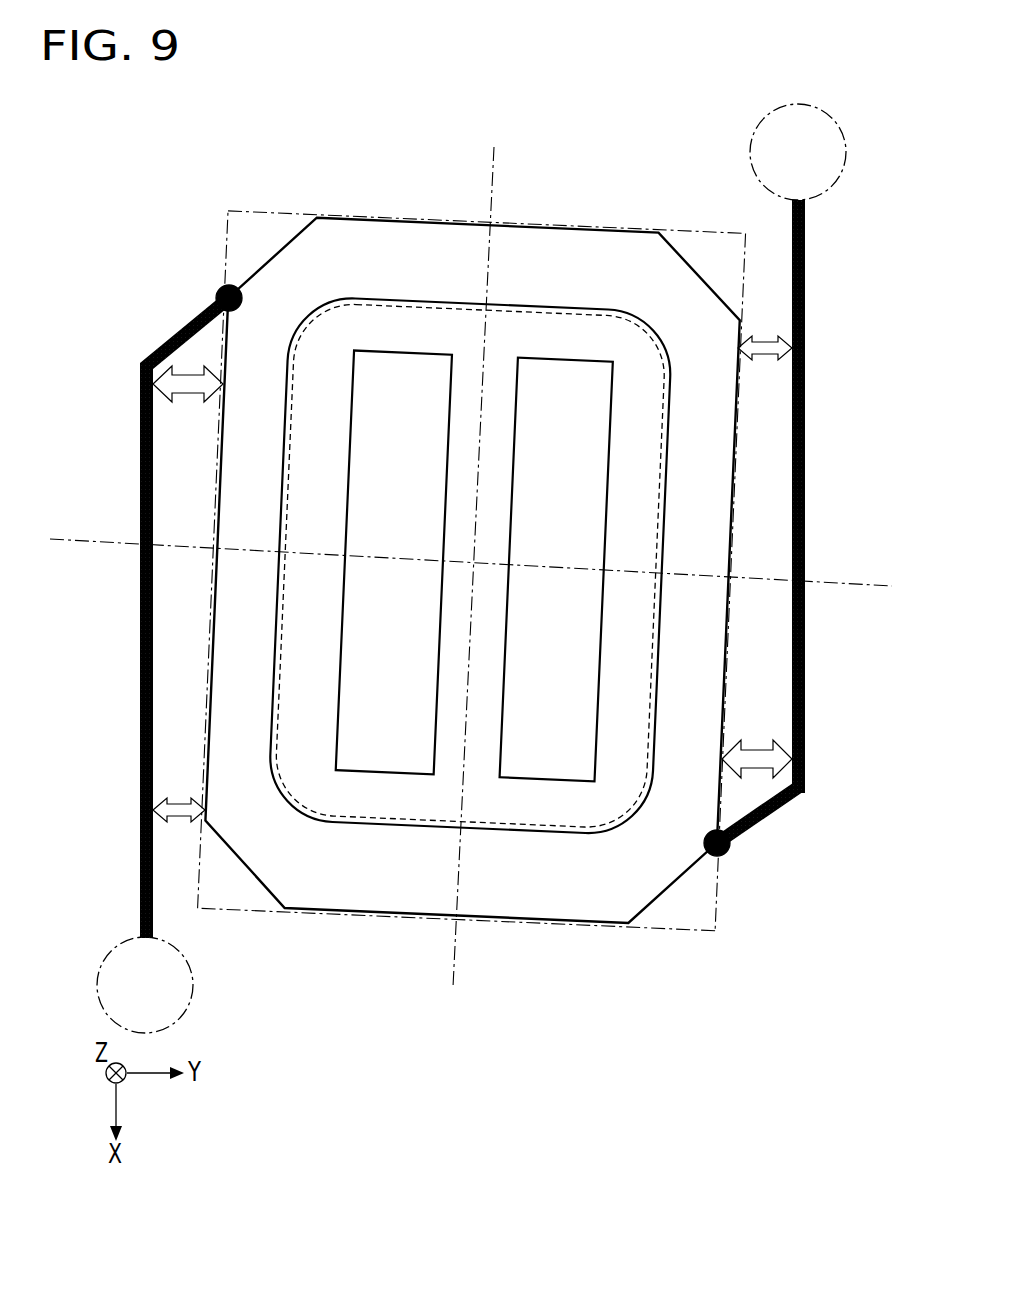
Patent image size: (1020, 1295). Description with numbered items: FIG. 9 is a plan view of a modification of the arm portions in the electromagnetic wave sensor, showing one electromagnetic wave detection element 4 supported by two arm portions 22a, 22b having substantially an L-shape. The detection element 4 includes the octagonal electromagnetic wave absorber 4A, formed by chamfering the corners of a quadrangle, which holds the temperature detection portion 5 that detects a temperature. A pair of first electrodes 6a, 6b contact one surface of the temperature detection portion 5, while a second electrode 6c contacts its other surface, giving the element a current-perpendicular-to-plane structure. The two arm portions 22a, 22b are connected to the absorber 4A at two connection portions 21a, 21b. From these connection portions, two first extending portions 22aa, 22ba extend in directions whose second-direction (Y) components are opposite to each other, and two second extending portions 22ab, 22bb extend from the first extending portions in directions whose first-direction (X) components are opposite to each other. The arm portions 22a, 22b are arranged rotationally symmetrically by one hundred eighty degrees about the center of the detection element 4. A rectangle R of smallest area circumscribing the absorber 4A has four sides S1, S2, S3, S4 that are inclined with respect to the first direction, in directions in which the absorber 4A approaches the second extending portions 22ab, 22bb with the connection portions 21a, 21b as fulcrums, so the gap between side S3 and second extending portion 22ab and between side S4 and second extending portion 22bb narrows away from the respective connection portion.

The electromagnetic wave detection element 4 is at (475, 519).
The electromagnetic wave absorber 4A is at (320, 200).
The temperature detection portion 5 is at (610, 310).
The first electrode 6a is at (558, 395).
The first electrode 6b is at (400, 382).
The second electrode 6c is at (499, 310).
The connection portion 21a is at (725, 856).
The connection portion 21b is at (222, 289).
The arm portion 22a is at (813, 544).
The first extending portion 22aa is at (772, 814).
The second extending portion 22ab is at (806, 462).
The arm portion 22b is at (135, 595).
The first extending portion 22ba is at (182, 333).
The second extending portion 22bb is at (140, 626).
The rectangle R is at (466, 562).
The side S1 is at (282, 211).
The side S2 is at (300, 912).
The side S3 is at (734, 543).
The side S4 is at (216, 458).